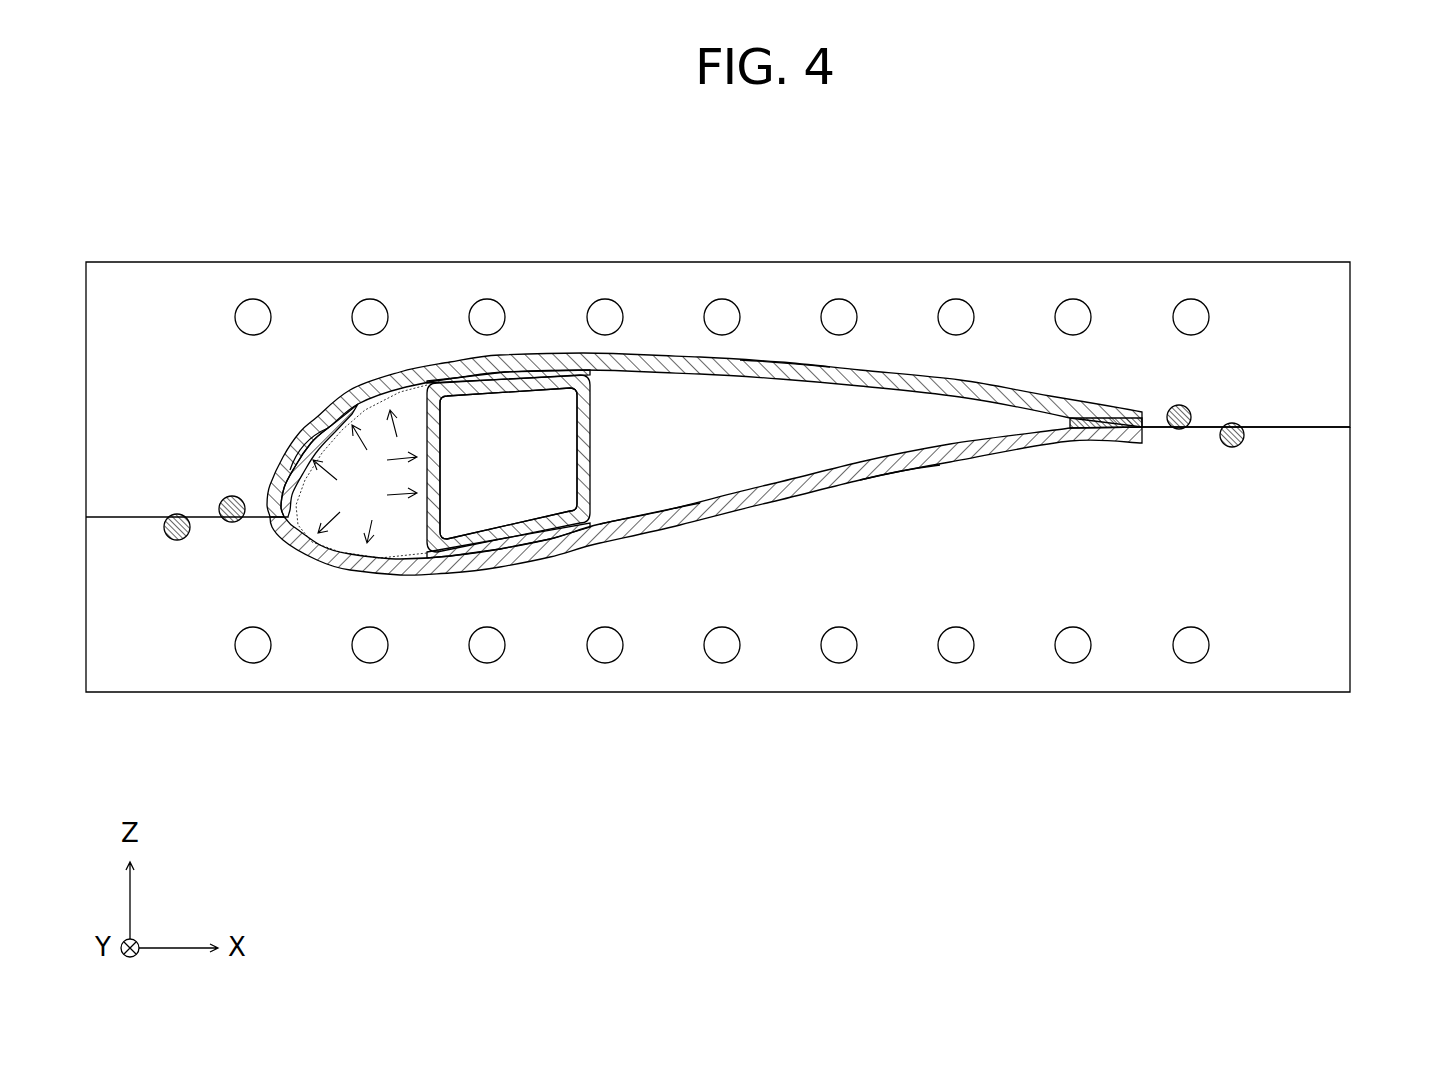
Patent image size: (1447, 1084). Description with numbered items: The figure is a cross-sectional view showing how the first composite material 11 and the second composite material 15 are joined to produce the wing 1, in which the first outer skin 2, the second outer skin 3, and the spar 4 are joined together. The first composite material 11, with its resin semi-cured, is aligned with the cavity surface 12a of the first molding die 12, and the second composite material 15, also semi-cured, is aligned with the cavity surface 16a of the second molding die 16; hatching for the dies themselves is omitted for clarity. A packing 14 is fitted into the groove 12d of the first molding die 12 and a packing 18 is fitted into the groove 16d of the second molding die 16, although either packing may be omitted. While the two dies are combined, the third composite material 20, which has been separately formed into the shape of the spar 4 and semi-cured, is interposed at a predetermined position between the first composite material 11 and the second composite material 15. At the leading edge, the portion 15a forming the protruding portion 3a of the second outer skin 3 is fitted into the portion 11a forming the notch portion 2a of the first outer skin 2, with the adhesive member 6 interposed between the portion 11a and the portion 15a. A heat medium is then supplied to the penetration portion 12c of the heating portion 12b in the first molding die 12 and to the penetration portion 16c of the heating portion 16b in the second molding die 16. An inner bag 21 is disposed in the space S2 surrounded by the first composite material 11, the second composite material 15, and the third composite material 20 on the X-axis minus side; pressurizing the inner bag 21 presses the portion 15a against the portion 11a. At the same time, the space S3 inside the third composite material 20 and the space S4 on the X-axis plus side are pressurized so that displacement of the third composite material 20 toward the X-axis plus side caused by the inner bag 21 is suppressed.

The wing 1 is at (906, 350).
The first outer skin 2 is at (674, 339).
The notch portion 2a is at (290, 445).
The second outer skin 3 is at (778, 517).
The protruding portion 3a is at (318, 410).
The spar 4 is at (518, 375).
The adhesive member 6 is at (305, 432).
The first composite material 11 is at (667, 313).
The portion forming the notch portion 11a is at (667, 348).
The first molding die 12 is at (1248, 230).
The cavity surface 12a is at (782, 360).
The heating portion 12b is at (722, 256).
The penetration portion 12c is at (1077, 300).
The groove 12d is at (1289, 379).
The packing 14 is at (1185, 408).
The second composite material 15 is at (706, 497).
The portion forming the protruding portion 15a is at (706, 387).
The second molding die 16 is at (1290, 718).
The cavity surface 16a is at (897, 470).
The heating portion 16b is at (722, 700).
The penetration portion 16c is at (1082, 662).
The groove 16d is at (1319, 473).
The packing 18 is at (1228, 447).
The third composite material 20 is at (508, 475).
The inner bag 21 is at (318, 572).
The space S2 is at (400, 548).
The space S3 is at (538, 510).
The space S4 is at (653, 502).